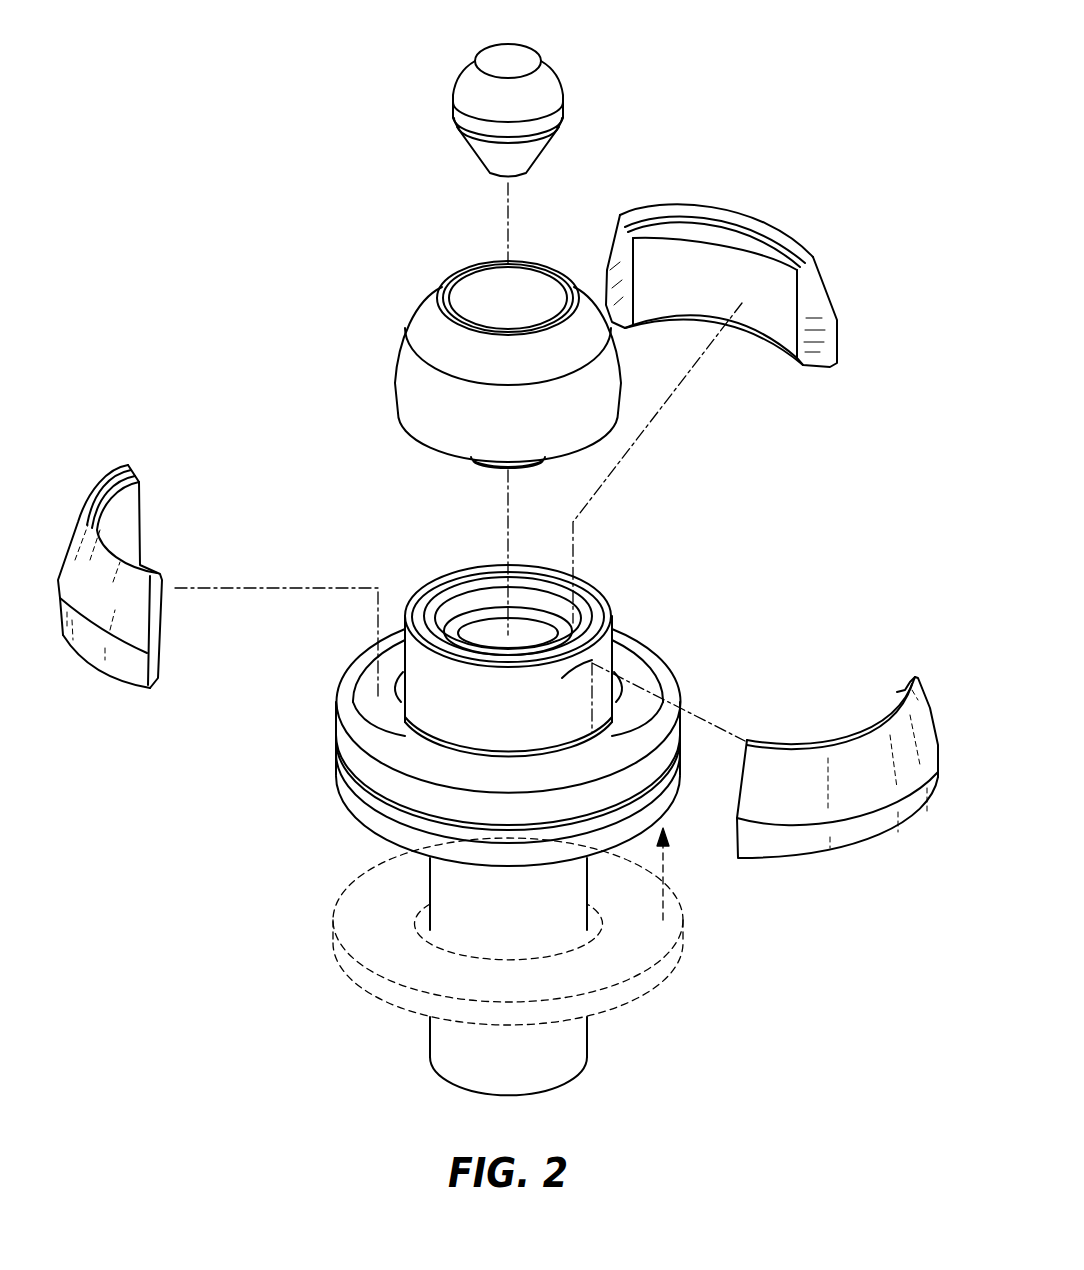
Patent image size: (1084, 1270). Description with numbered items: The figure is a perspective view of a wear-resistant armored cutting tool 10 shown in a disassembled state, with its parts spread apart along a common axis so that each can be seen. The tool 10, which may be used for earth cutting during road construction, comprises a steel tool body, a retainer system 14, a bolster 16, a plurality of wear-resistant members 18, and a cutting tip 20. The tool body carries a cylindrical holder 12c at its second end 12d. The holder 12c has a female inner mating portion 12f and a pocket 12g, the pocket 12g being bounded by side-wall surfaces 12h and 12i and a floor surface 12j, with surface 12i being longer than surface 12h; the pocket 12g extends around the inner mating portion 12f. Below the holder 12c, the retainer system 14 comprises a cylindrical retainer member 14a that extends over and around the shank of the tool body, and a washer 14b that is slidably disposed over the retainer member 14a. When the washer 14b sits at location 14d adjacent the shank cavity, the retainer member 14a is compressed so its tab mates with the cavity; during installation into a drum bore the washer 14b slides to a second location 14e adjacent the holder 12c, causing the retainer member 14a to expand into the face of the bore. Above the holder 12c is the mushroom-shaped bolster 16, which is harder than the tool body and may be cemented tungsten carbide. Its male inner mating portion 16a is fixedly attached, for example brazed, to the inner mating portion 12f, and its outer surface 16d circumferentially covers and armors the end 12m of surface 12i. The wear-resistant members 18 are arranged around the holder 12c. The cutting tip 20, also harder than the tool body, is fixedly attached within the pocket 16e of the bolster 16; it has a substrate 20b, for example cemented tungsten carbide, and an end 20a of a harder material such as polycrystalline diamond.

The wear-resistant armored cutting tool 10 is at (836, 86).
The holder 12c is at (627, 697).
The second end 12d is at (670, 673).
The inner mating portion 12f is at (548, 625).
The pocket 12g is at (393, 687).
The surface 12h is at (670, 697).
The surface 12i is at (440, 700).
The surface 12j is at (637, 688).
The end 12m is at (457, 572).
The retainer system 14 is at (394, 1043).
The retainer member 14a is at (580, 1043).
The washer 14b is at (357, 807).
The location 14d is at (687, 940).
The second location 14e is at (675, 805).
The bolster 16 is at (405, 380).
The inner mating portion 16a is at (522, 462).
The outer surface 16d is at (622, 380).
The pocket 16e is at (487, 297).
The wear-resistant members 18 is at (843, 285).
The cutting tip 20 is at (566, 104).
The end 20a is at (530, 53).
The substrate 20b is at (478, 80).